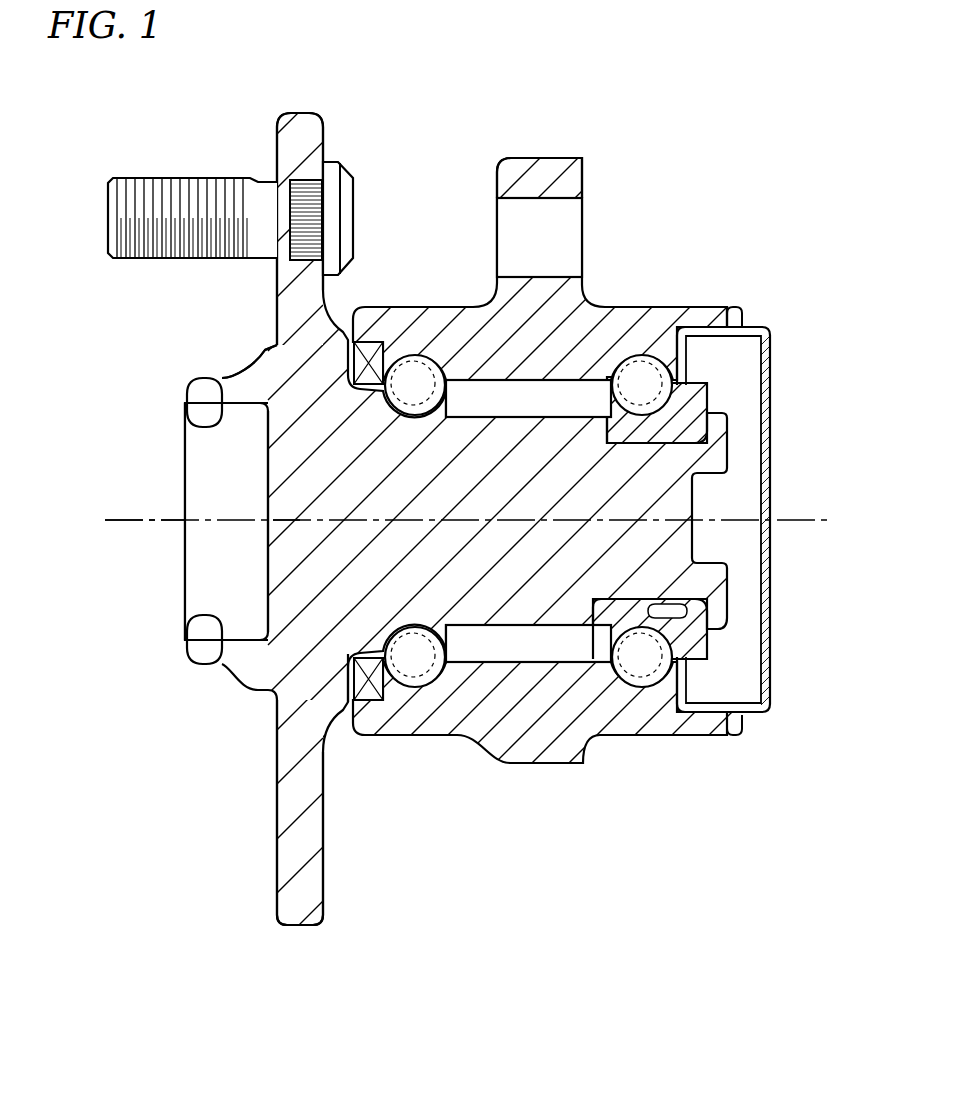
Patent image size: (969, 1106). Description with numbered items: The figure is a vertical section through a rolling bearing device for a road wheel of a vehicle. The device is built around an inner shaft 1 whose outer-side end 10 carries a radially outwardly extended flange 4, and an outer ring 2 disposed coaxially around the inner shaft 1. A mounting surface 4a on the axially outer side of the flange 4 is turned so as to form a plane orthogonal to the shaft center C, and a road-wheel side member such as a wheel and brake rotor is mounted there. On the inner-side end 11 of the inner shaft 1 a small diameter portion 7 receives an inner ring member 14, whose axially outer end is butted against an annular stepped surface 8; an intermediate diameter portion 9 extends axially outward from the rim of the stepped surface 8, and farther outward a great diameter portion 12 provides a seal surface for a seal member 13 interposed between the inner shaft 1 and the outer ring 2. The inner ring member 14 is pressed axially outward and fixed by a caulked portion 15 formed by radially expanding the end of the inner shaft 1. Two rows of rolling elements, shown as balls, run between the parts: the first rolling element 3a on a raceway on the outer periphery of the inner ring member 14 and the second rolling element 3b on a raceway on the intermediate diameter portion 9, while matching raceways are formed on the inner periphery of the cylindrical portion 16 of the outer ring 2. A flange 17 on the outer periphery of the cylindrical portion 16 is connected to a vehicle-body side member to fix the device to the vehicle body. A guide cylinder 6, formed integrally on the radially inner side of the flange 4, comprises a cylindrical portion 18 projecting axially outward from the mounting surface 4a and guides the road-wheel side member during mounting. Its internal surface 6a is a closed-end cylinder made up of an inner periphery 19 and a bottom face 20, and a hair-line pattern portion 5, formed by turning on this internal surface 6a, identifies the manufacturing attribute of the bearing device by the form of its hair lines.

The inner shaft 1 is at (544, 444).
The outer ring 2 is at (447, 307).
The first rolling element 3a is at (641, 356).
The second rolling element 3b is at (417, 355).
The flange 4 is at (318, 130).
The mounting surface 4a is at (277, 808).
The hair-line pattern portion 5 is at (234, 637).
The guide cylinder 6 is at (230, 655).
The internal surface 6a is at (78, 375).
The small diameter portion 7 is at (665, 612).
The stepped surface 8 is at (598, 635).
The intermediate diameter portion 9 is at (530, 628).
The outer-side end 10 is at (272, 350).
The inner-side end 11 is at (692, 453).
The great diameter portion 12 is at (353, 688).
The seal member 13 is at (370, 698).
The inner ring member 14 is at (690, 395).
The caulked portion 15 is at (712, 628).
The cylindrical portion 16 is at (663, 318).
The flange 17 is at (538, 170).
The cylindrical portion 18 is at (220, 378).
The inner periphery 19 is at (183, 415).
The bottom face 20 is at (268, 458).
The shaft center C is at (145, 530).